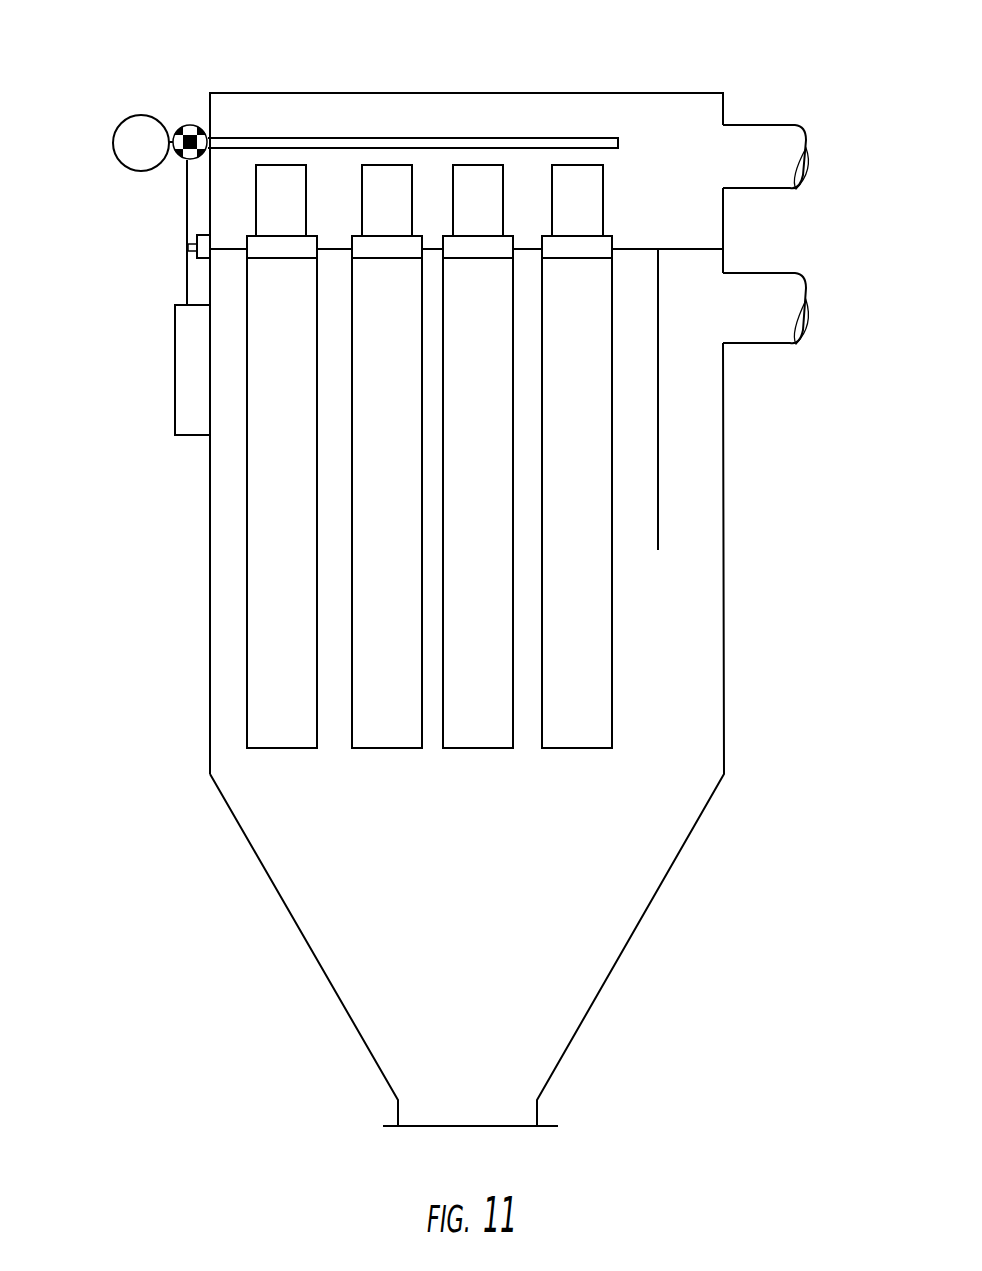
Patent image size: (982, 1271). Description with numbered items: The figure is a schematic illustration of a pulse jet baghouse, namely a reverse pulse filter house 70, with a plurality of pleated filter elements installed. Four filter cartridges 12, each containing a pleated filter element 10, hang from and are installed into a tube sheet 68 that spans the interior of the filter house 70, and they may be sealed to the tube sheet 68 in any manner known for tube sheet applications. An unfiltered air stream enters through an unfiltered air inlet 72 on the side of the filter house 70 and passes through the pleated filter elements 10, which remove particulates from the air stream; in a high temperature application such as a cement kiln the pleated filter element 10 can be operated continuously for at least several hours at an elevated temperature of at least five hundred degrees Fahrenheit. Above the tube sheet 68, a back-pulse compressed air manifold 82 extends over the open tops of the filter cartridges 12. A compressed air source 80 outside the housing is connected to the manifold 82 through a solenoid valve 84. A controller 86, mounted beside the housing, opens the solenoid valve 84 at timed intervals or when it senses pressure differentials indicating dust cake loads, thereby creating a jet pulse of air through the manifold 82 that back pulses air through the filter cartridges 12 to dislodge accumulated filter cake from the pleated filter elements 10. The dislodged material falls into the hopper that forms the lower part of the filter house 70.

The filter house 70 is at (161, 58).
The unfiltered air inlet 72 is at (763, 312).
The tube sheet 68 is at (690, 248).
The pleated filter element 10 is at (580, 613).
The filter cartridge 12 is at (614, 682).
The back-pulse compressed air manifold 82 is at (360, 147).
The solenoid valve 84 is at (187, 125).
The compressed air source 80 is at (135, 153).
The controller 86 is at (182, 387).